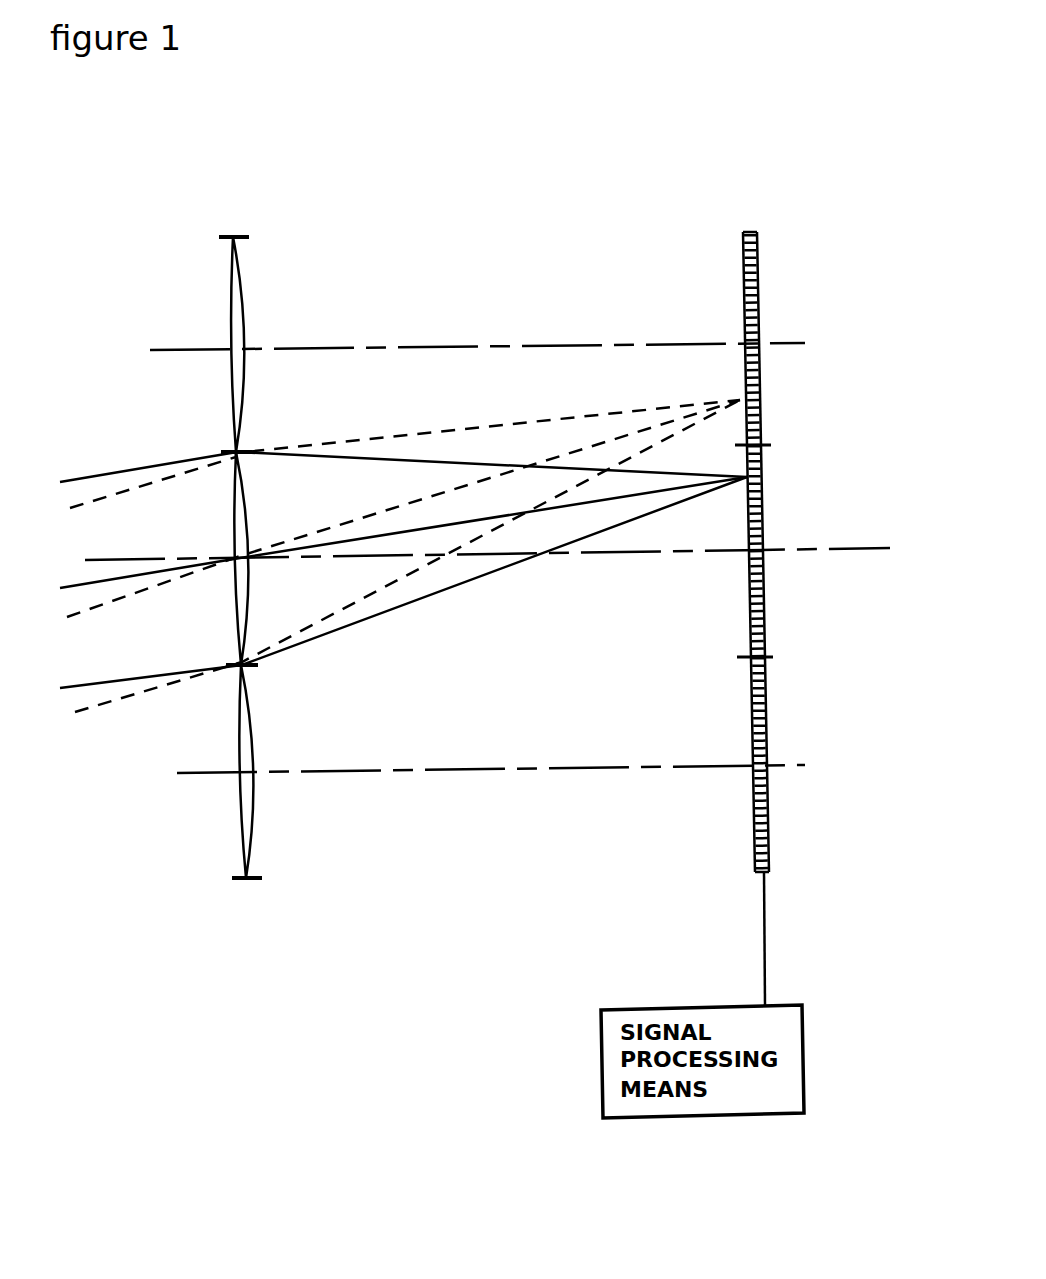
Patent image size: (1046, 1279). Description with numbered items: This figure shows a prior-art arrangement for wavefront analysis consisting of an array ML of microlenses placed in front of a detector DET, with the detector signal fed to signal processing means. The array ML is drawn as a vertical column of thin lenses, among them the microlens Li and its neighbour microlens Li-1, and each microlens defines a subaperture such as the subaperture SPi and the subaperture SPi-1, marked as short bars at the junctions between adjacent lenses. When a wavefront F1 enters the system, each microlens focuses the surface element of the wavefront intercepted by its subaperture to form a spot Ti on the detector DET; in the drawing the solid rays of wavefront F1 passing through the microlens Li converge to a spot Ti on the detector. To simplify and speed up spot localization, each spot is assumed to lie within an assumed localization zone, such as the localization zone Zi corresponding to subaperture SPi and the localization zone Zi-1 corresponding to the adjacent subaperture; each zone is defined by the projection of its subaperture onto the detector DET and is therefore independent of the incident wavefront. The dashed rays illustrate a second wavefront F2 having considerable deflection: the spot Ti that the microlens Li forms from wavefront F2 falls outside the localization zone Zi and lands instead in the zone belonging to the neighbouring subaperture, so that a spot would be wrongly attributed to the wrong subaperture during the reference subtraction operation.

The array of microlenses ML is at (250, 536).
The subaperture i SPi is at (233, 481).
The subaperture i-1 SPi-1 is at (240, 844).
The microlens i Li is at (246, 492).
The microlens i-1 Li-1 is at (257, 752).
The wavefront F1 is at (112, 474).
The deflected wavefront F2 is at (142, 694).
The detector DET is at (760, 525).
The localization zone i Zi is at (762, 524).
The localization zone i-1 Zi-1 is at (767, 732).
The spot Ti is at (743, 400).